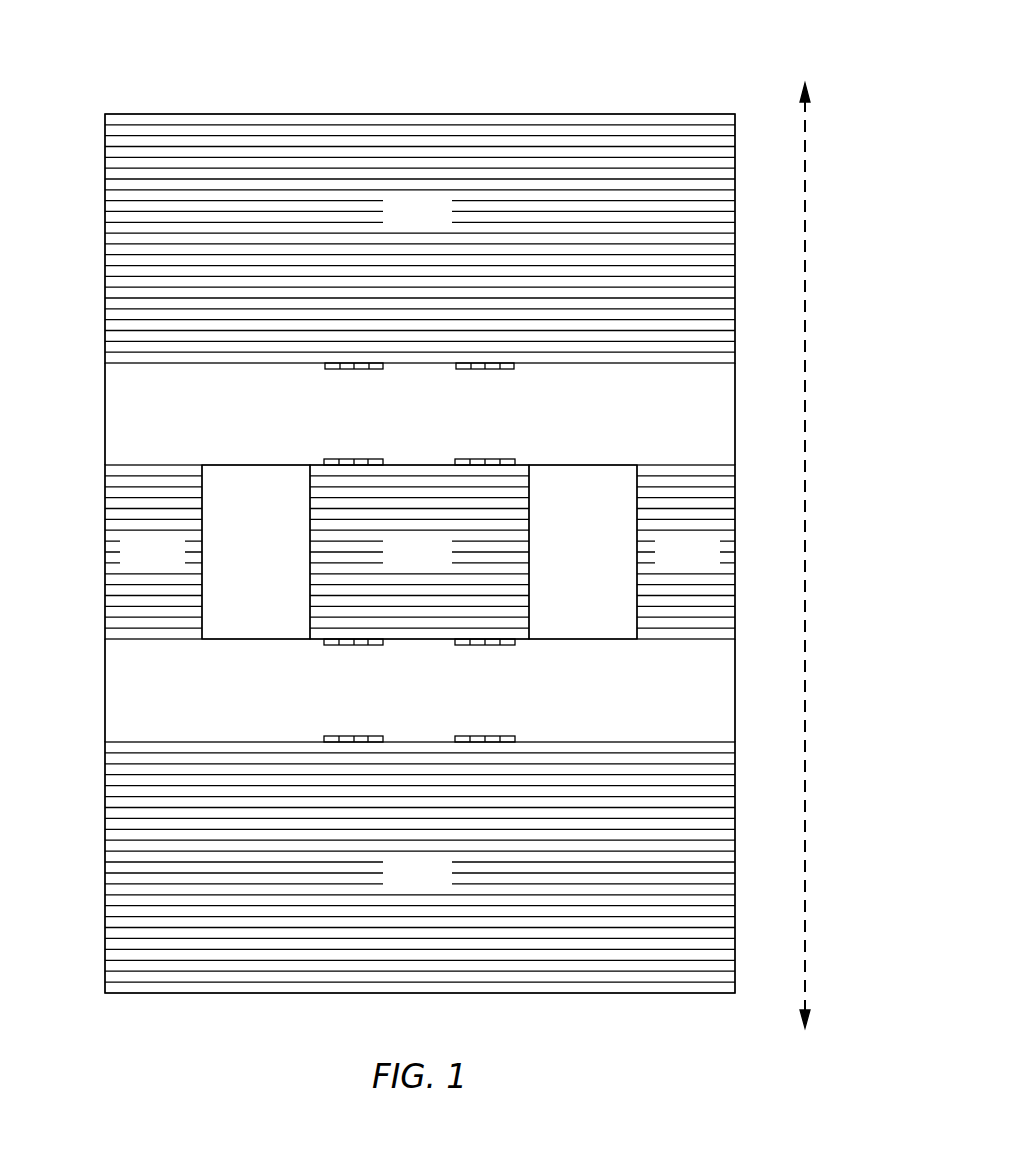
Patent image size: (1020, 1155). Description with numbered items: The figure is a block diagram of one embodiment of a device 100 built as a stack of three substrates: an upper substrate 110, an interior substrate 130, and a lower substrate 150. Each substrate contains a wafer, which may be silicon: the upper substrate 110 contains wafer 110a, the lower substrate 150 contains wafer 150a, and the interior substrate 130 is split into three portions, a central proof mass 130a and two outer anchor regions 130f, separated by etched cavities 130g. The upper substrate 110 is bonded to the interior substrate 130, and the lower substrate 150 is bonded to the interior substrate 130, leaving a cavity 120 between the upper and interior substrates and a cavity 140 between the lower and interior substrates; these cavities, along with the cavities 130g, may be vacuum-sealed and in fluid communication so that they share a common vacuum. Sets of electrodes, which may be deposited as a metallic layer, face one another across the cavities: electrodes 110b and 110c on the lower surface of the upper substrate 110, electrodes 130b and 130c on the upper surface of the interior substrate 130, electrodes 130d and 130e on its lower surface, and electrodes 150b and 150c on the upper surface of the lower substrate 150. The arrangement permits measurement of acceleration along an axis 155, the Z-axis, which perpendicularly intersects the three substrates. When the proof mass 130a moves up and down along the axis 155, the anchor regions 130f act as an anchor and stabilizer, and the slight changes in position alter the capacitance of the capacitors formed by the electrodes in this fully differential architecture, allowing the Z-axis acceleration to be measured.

The device 100 is at (667, 75).
The upper substrate 110 is at (95, 114).
The wafer 110a is at (396, 224).
The electrode 110b is at (354, 370).
The electrode 110c is at (486, 370).
The cavity 120 is at (402, 426).
The interior substrate 130 is at (95, 457).
The proof mass 130a is at (396, 559).
The electrode 130b is at (355, 458).
The electrode 130c is at (482, 458).
The electrode 130d is at (356, 646).
The electrode 130e is at (484, 646).
The anchor region 130f is at (134, 558).
The cavity 130g is at (234, 558).
The cavity 140 is at (402, 706).
The lower substrate 150 is at (95, 736).
The wafer 150a is at (396, 882).
The electrode 150b is at (354, 734).
The electrode 150c is at (489, 734).
The axis 155 is at (806, 522).